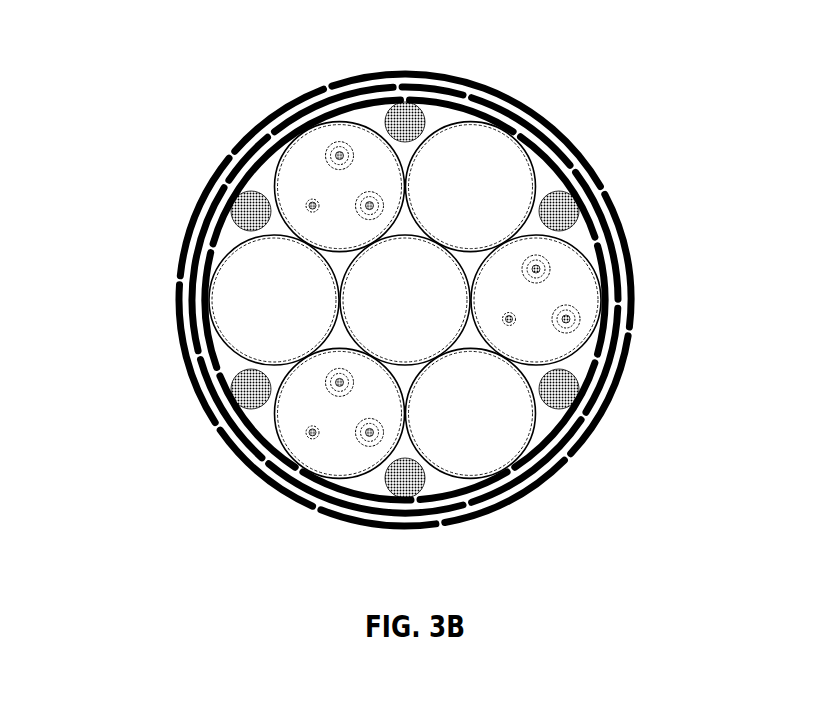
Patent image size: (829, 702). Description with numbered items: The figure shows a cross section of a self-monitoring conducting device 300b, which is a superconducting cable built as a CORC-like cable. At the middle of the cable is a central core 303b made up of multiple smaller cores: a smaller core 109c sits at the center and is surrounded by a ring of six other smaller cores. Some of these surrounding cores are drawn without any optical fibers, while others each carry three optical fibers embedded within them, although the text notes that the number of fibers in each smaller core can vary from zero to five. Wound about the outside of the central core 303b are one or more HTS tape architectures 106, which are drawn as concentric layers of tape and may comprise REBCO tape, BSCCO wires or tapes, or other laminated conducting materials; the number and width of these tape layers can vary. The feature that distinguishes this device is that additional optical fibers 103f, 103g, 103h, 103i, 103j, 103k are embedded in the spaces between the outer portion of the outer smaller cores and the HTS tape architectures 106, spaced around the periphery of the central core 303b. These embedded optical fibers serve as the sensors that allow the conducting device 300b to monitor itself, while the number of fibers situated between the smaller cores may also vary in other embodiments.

The self-monitoring conducting device 300b is at (240, 62).
The HTS tape architecture 106 is at (180, 279).
The central core 303b is at (214, 358).
The smaller core 109c is at (408, 260).
The optical fiber 103f is at (233, 202).
The optical fiber 103g is at (402, 101).
The optical fiber 103h is at (590, 208).
The optical fiber 103i is at (580, 398).
The optical fiber 103j is at (410, 497).
The optical fiber 103k is at (232, 385).